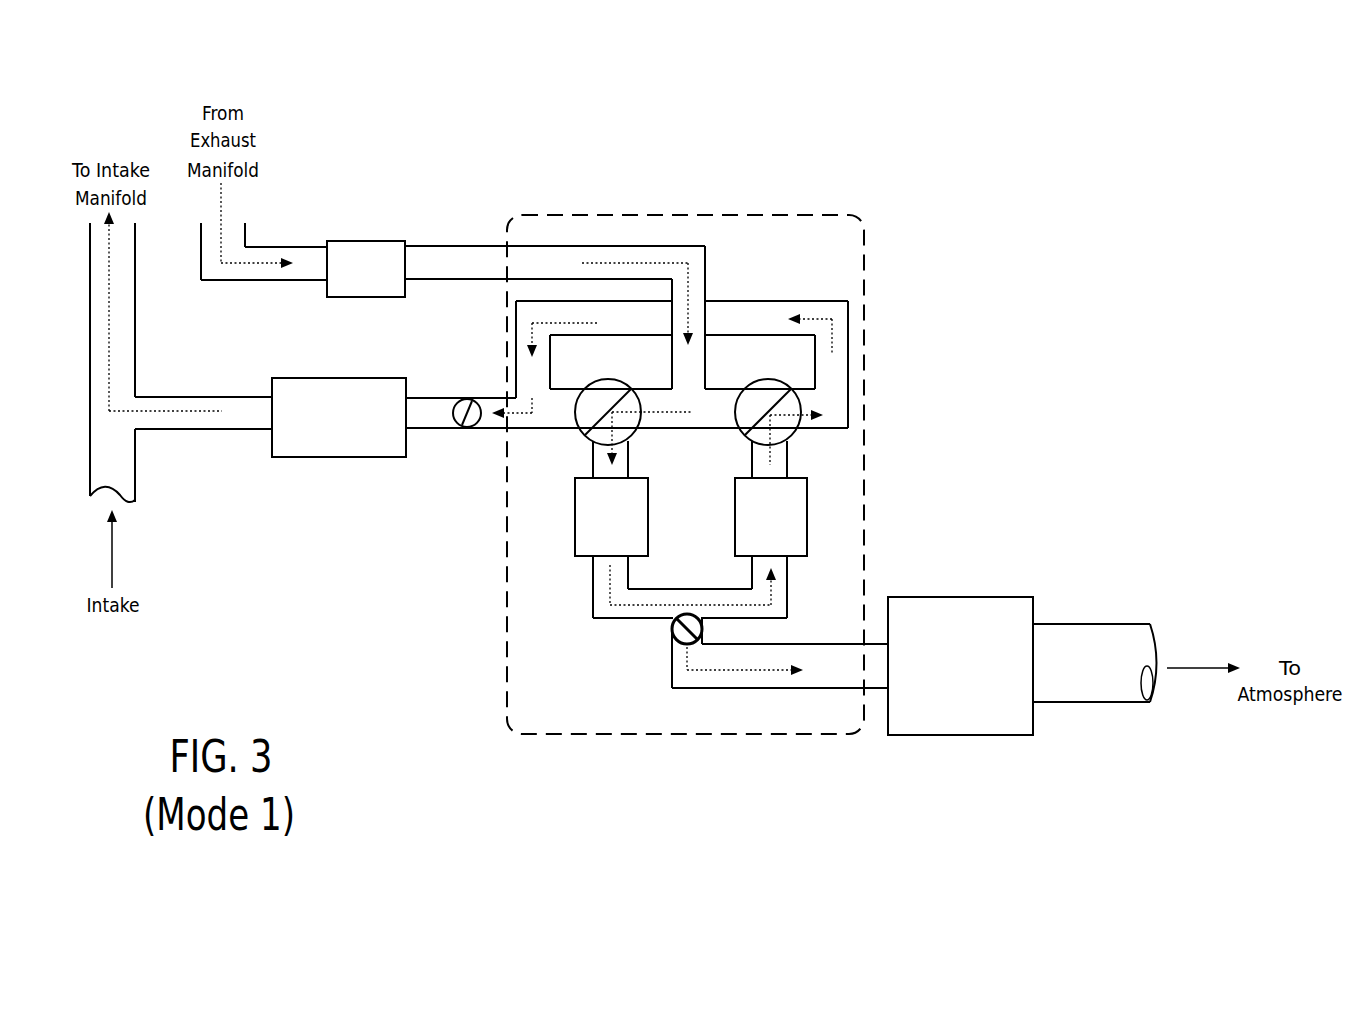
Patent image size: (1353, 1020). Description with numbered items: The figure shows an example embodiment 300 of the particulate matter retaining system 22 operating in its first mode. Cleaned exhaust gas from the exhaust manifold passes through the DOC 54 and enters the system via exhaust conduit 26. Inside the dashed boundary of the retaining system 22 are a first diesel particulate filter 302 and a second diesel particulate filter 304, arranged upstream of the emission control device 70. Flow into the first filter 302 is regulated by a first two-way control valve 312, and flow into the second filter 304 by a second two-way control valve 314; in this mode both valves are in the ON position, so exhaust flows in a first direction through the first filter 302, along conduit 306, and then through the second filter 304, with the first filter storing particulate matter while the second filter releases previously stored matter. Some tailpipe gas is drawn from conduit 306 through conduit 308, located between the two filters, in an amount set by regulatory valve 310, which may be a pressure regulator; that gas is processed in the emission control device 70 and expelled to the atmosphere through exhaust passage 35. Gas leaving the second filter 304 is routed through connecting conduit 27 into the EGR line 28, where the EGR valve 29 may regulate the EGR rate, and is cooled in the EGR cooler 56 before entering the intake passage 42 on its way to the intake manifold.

The example embodiment 300 is at (1018, 143).
The particulate matter retaining system 22 is at (760, 214).
The exhaust conduit 26 is at (268, 247).
The connecting conduit 27 is at (745, 301).
The EGR line 28 is at (217, 397).
The EGR valve 29 is at (467, 399).
The exhaust passage 35 is at (1103, 624).
The intake passage 42 is at (88, 446).
The DOC 54 is at (360, 241).
The EGR cooler 56 is at (323, 457).
The emission control device 70 is at (930, 597).
The first diesel particulate filter 302 is at (575, 498).
The second diesel particulate filter 304 is at (807, 498).
The conduit 306 is at (593, 605).
The conduit 308 is at (742, 690).
The regulatory valve 310 is at (672, 630).
The first two-way control valve 312 is at (597, 374).
The second two-way control valve 314 is at (757, 374).